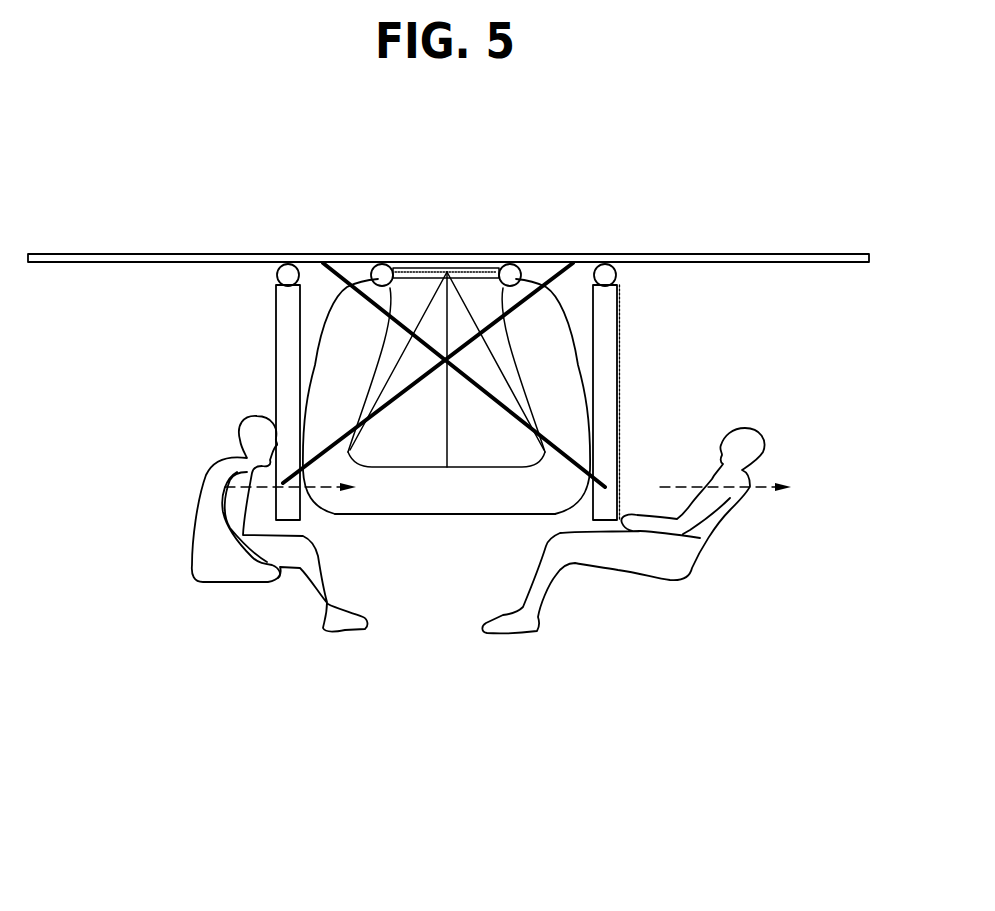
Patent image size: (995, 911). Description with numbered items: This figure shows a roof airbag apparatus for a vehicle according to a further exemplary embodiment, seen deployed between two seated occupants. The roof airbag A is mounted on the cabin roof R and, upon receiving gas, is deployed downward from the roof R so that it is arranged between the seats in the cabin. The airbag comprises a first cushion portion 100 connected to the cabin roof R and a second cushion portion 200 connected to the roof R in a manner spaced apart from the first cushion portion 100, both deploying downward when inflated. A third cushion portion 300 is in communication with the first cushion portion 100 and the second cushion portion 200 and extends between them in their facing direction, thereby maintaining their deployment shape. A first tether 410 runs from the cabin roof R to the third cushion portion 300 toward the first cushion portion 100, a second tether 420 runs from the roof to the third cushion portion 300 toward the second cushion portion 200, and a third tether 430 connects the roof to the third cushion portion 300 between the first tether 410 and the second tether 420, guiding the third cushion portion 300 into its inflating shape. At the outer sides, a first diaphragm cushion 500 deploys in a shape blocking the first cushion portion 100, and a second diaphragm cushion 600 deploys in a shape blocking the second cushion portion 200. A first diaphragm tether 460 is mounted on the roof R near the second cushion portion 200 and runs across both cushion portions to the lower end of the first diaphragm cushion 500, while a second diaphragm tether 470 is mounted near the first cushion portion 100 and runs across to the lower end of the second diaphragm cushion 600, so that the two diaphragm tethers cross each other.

The first cushion portion 100 is at (343, 348).
The second cushion portion 200 is at (555, 332).
The third cushion portion 300 is at (512, 497).
The first tether 410 is at (382, 395).
The second tether 420 is at (505, 377).
The third tether 430 is at (447, 418).
The first diaphragm tether 460 is at (480, 306).
The second diaphragm tether 470 is at (403, 330).
The first diaphragm cushion 500 is at (290, 344).
The second diaphragm cushion 600 is at (607, 367).
The cabin roof R is at (761, 262).
The roof airbag A is at (437, 535).